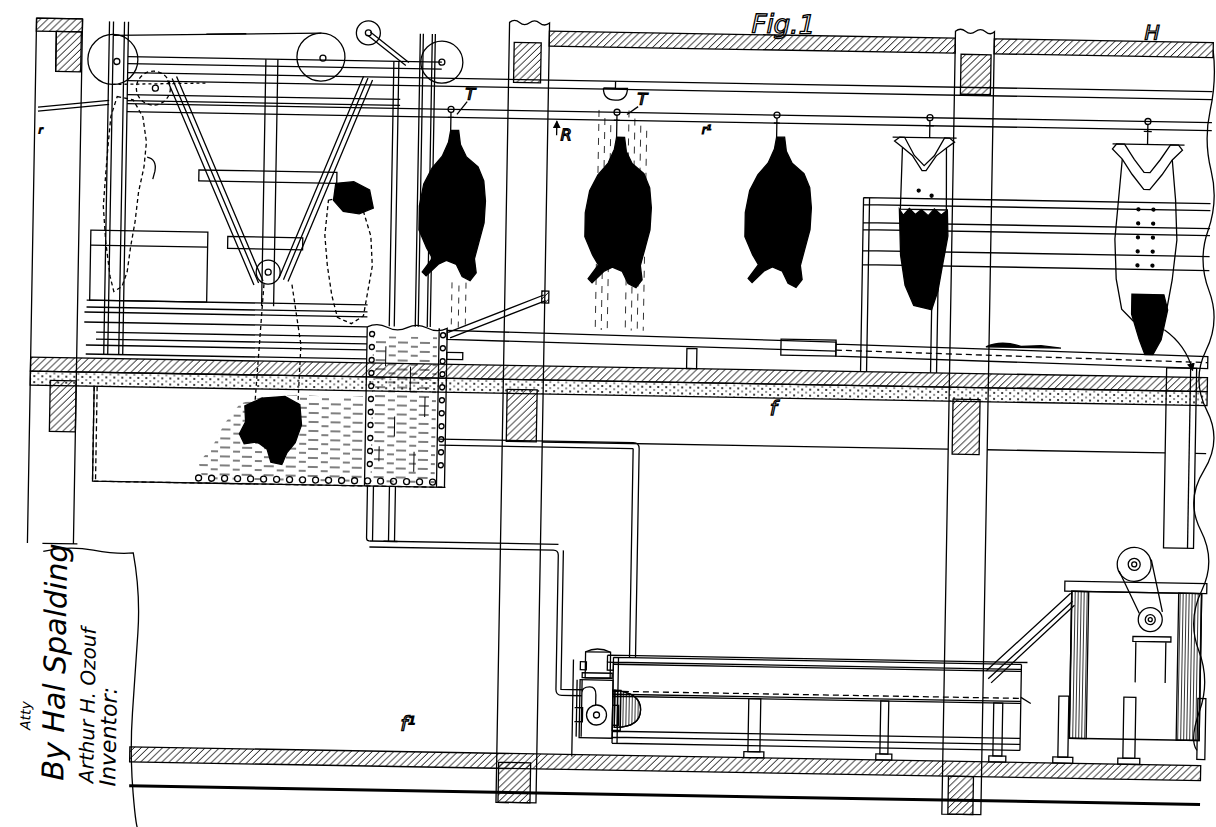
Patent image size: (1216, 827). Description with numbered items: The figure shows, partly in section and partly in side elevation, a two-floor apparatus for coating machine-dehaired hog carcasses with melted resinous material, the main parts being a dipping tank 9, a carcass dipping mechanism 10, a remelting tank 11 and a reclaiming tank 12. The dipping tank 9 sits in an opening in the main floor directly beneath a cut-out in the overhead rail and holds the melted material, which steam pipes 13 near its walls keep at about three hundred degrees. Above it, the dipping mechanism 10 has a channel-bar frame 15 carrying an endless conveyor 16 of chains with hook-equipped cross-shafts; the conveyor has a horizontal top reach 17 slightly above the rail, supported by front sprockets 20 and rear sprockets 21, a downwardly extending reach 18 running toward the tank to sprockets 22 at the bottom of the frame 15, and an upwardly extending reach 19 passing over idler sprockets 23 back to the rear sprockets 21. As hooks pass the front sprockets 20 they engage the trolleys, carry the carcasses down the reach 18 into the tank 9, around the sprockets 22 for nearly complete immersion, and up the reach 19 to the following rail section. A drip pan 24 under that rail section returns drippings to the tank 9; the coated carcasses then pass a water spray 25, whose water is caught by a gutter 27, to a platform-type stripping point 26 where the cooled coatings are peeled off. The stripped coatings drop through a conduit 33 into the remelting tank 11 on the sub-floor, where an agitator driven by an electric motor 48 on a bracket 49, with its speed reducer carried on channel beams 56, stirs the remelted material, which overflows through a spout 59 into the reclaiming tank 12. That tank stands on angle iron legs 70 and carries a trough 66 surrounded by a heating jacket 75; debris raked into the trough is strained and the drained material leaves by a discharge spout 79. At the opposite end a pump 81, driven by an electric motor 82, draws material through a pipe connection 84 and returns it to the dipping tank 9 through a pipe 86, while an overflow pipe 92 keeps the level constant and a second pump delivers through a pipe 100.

The dipping tank 9 is at (325, 493).
The carcass dipping mechanism 10 is at (165, 43).
The remelting tank 11 is at (1100, 594).
The reclaiming tank 12 is at (720, 692).
The steam pipes 13 is at (266, 489).
The frame 15 is at (250, 82).
The endless conveyor 16 is at (228, 41).
The top reach 17 is at (317, 20).
The downwardly extending reach 18 is at (204, 156).
The upwardly extending reach 19 is at (346, 147).
The front sprockets 20 is at (114, 48).
The rear sprockets 21 is at (445, 52).
The sprockets 22 is at (258, 286).
The idler sprockets 23 is at (402, 66).
The drip pan 24 is at (533, 298).
The water spray 25 is at (622, 91).
The stripping point 26 is at (1009, 222).
The gutter 27 is at (657, 343).
The conduit 33 is at (1166, 461).
The electric motor 48 is at (1167, 611).
The bracket 49 is at (1136, 638).
The channel beams 56 is at (1128, 602).
The spout 59 is at (1043, 620).
The trough 66 is at (840, 657).
The angle iron legs 70 is at (884, 718).
The jacket 75 is at (872, 673).
The discharge spout 79 is at (1022, 694).
The pump 81 is at (605, 727).
The electric motor 82 is at (604, 651).
The pipe connection 84 is at (645, 715).
The pipe 86 is at (474, 552).
The overflow pipe 92 is at (641, 531).
The pipe 100 is at (362, 538).